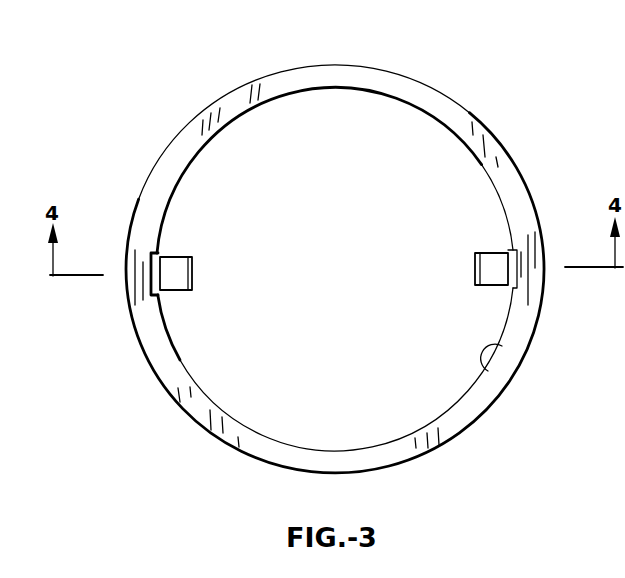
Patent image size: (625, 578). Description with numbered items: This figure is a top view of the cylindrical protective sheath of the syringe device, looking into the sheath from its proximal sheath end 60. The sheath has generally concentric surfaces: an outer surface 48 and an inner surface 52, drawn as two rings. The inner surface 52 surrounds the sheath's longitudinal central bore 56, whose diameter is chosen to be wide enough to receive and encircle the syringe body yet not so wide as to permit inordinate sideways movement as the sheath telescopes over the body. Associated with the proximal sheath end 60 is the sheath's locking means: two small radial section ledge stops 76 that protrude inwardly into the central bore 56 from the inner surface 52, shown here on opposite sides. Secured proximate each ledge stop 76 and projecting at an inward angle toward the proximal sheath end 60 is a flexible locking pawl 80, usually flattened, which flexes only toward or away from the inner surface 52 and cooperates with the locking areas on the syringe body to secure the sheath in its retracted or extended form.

The outer surface 48 is at (188, 418).
The inner surface 52 is at (495, 372).
The central bore 56 is at (307, 153).
The proximal sheath end 60 is at (402, 85).
The ledge stop 76 is at (157, 252).
The locking pawl 80 is at (175, 277).